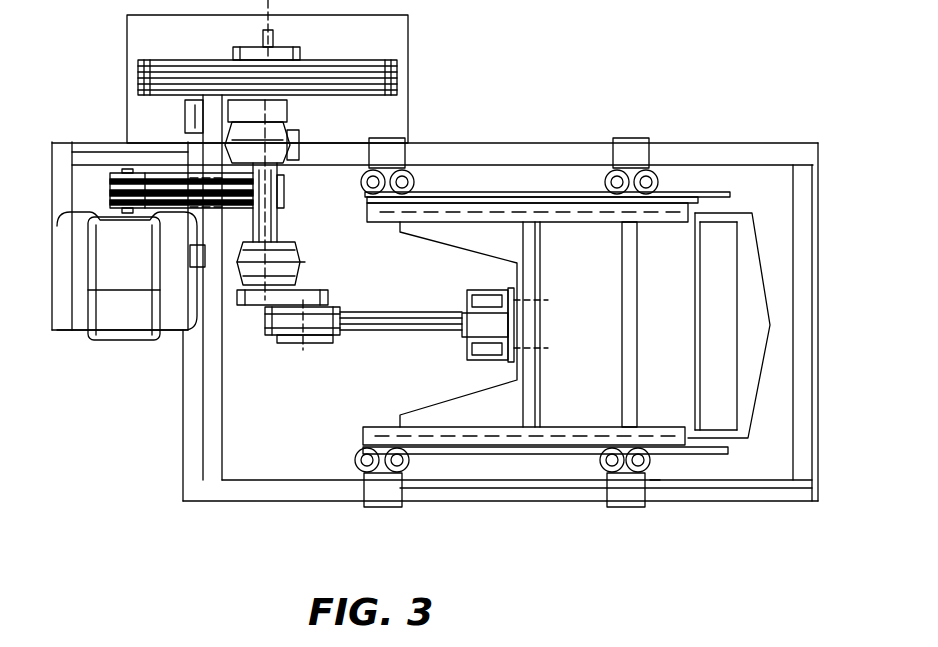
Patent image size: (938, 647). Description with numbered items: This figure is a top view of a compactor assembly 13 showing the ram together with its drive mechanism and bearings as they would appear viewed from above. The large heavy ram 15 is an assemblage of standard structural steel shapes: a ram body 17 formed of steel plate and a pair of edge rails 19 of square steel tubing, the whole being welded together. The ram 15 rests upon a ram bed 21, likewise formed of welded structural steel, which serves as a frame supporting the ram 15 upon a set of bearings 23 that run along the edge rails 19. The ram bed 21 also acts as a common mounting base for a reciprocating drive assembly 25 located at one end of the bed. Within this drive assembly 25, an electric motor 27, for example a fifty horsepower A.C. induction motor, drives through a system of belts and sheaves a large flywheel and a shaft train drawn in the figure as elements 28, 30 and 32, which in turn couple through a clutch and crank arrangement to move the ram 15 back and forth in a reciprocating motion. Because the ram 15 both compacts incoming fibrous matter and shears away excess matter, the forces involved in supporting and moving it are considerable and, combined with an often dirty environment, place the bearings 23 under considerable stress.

The compactor assembly 13 is at (657, 505).
The ram 15 is at (748, 455).
The ram body 17 is at (757, 224).
The edge rails 19 is at (365, 207).
The ram bed 21 is at (703, 143).
The bearings 23 is at (406, 168).
The reciprocating drive assembly 25 is at (170, 432).
The electric motor 27 is at (95, 340).
The pulley 28 is at (357, 62).
The drive gear 30 is at (253, 315).
The drive shaft 32 is at (393, 333).